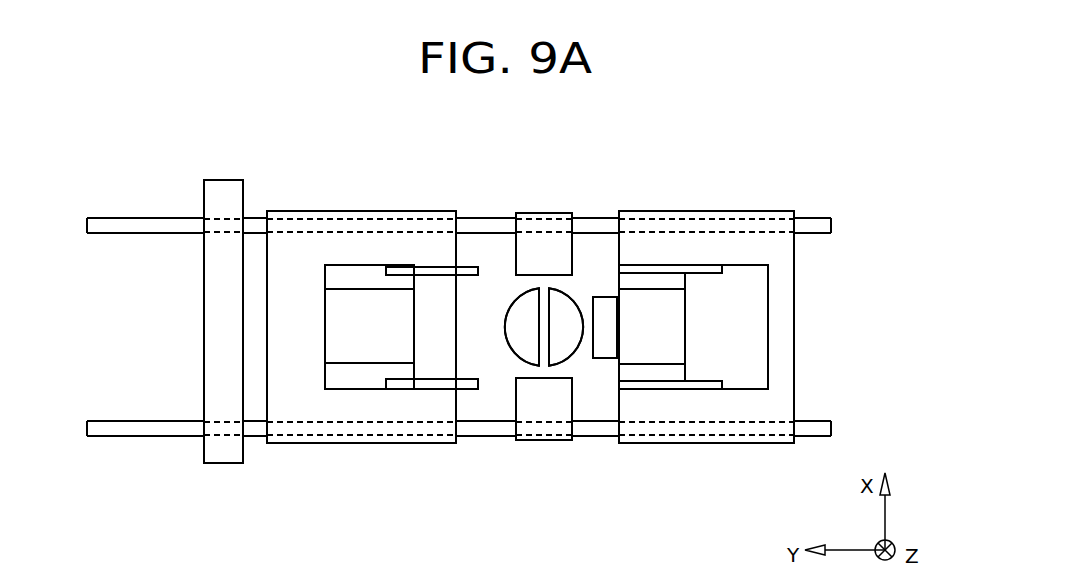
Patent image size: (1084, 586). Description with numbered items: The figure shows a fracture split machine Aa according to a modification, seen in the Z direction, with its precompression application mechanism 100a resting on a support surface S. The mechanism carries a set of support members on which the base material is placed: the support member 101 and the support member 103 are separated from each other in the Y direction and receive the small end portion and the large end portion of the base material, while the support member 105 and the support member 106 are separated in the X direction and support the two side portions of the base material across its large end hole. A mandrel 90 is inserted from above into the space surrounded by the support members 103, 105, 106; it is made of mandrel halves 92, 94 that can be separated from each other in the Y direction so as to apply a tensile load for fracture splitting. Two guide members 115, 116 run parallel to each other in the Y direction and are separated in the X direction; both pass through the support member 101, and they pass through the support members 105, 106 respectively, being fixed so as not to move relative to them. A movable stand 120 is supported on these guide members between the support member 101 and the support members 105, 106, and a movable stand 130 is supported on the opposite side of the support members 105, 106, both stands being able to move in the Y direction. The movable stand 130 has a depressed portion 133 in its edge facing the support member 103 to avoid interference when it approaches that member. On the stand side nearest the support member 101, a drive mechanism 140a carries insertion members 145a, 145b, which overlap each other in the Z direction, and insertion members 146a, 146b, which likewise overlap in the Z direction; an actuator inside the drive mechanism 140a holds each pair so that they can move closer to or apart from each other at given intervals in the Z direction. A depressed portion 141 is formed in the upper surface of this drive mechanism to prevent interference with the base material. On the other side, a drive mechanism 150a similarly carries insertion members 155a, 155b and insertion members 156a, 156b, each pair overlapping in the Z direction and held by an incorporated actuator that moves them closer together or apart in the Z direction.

The guide member 115 is at (128, 218).
The guide member 116 is at (140, 436).
The support member 101 is at (230, 358).
The support surface S is at (120, 318).
The movable stand 120 is at (308, 210).
The drive mechanism 140a is at (325, 307).
The depressed portion 141 is at (368, 302).
The insertion member 145a is at (475, 267).
The insertion member 145b is at (438, 205).
The insertion member 146a is at (477, 390).
The insertion member 146b is at (437, 455).
The support member 105 is at (525, 213).
The support member 106 is at (533, 440).
The mandrel 90 is at (608, 157).
The mandrel half 92 is at (528, 308).
The mandrel half 94 is at (565, 313).
The support member 103 is at (606, 330).
The movable stand 130 is at (705, 211).
The precompression application mechanism 100a is at (768, 188).
The fracture split machine Aa is at (840, 64).
The drive mechanism 150a is at (722, 289).
The depressed portion 133 is at (637, 363).
The insertion member 155a is at (647, 272).
The insertion member 155b is at (670, 216).
The insertion member 156a is at (647, 388).
The insertion member 156b is at (670, 453).